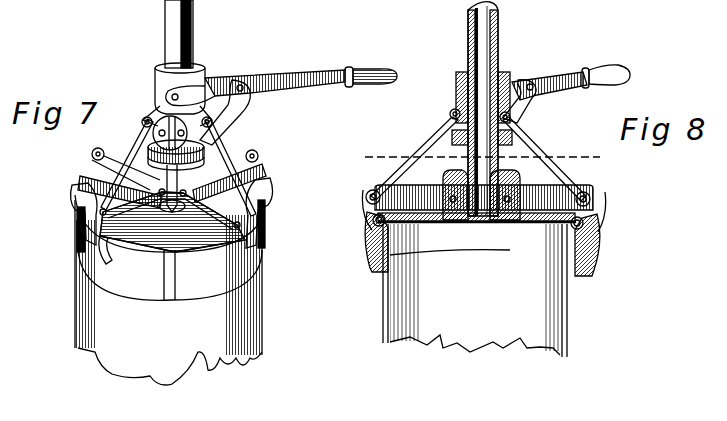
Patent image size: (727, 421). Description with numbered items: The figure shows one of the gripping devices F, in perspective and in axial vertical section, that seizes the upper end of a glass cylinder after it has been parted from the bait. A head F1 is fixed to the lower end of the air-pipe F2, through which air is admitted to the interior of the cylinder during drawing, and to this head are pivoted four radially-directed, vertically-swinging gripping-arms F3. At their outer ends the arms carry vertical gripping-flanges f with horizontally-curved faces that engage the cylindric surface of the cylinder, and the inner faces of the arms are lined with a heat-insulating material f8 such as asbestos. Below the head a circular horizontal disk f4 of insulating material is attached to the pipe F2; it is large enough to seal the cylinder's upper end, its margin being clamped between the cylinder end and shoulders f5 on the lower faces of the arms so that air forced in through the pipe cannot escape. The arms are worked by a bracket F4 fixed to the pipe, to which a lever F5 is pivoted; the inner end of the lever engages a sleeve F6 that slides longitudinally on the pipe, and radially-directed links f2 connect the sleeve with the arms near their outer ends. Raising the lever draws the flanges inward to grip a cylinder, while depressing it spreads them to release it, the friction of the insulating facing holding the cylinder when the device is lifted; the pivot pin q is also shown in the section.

In FIG. 7, the air-pipe F2 is at (165, 30).
In FIG. 8, the air-pipe F2 is at (500, 54).
In FIG. 7, the sleeve F6 is at (204, 76).
In FIG. 8, the sleeve F6 is at (508, 78).
In FIG. 7, the lever F5 is at (318, 72).
In FIG. 8, the lever F5 is at (574, 74).
In FIG. 7, the bracket F4 is at (236, 114).
In FIG. 8, the bracket F4 is at (528, 110).
In FIG. 7, the radially-directed links f2 is at (136, 136).
In FIG. 8, the radially-directed links f2 is at (432, 144).
In FIG. 7, the gripping-arms F3 is at (100, 164).
In FIG. 8, the gripping-arms F3 is at (426, 188).
In FIG. 7, the gripping device F is at (248, 160).
In FIG. 8, the gripping device F is at (412, 152).
In FIG. 7, the head F1 is at (172, 220).
In FIG. 8, the head F1 is at (496, 186).
In FIG. 7, the shoulders f5 is at (72, 200).
In FIG. 8, the shoulders f5 is at (366, 204).
In FIG. 7, the circular horizontal disk f4 is at (150, 234).
In FIG. 8, the circular horizontal disk f4 is at (568, 192).
In FIG. 7, the gripping-flanges f is at (170, 290).
In FIG. 8, the gripping-flanges f is at (365, 247).
In FIG. 8, the pivot pin q is at (482, 141).
In FIG. 8, the heat-insulating material f8 is at (567, 252).